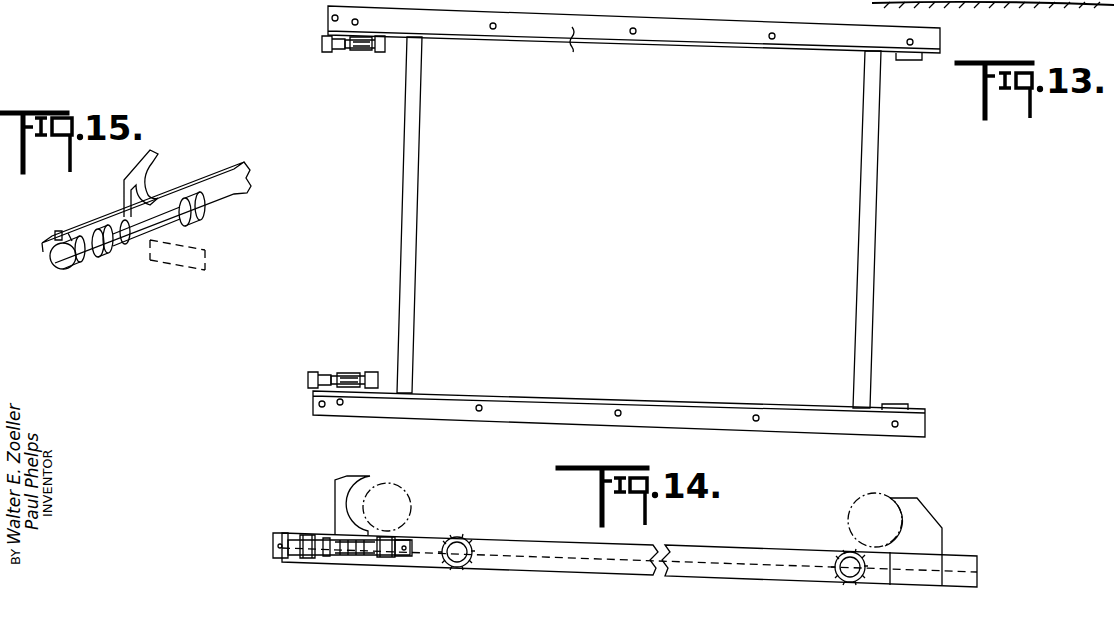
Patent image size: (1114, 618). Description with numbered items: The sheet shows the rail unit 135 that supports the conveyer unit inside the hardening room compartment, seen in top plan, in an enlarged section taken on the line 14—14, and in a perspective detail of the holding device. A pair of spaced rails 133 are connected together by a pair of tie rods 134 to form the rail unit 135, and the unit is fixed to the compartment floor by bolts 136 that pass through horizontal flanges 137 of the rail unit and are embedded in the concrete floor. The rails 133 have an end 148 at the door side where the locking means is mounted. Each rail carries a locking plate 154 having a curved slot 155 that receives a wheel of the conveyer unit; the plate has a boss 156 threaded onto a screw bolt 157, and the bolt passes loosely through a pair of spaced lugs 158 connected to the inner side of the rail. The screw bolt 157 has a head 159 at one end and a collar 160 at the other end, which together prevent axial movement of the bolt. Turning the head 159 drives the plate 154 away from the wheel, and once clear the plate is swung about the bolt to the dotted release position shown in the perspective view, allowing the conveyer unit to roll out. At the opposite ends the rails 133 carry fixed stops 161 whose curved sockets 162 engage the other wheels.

In FIG. 13, the section line 14 is at (329, 77).
In FIG. 13, the rails 133 is at (676, 45).
In FIG. 14, the rails 133 is at (543, 540).
In FIG. 15, the rails 133 is at (232, 176).
In FIG. 13, the tie rods 134 is at (422, 176).
In FIG. 14, the tie rods 134 is at (487, 526).
In FIG. 13, the rail unit 135 is at (876, 262).
In FIG. 14, the rail unit 135 is at (723, 544).
In FIG. 13, the bolts 136 is at (493, 30).
In FIG. 13, the horizontal flanges 137 is at (573, 47).
In FIG. 13, the frame end 148 is at (328, 20).
In FIG. 13, the locking plates 154 is at (362, 51).
In FIG. 14, the locking plates 154 is at (335, 490).
In FIG. 15, the locking plates 154 is at (152, 160).
In FIG. 14, the curved slot 155 is at (361, 505).
In FIG. 15, the curved slot 155 is at (146, 182).
In FIG. 14, the boss 156 is at (345, 556).
In FIG. 15, the boss 156 is at (178, 258).
In FIG. 14, the screw bolt 157 is at (326, 556).
In FIG. 15, the screw bolt 157 is at (127, 245).
In FIG. 14, the spaced lugs 158 is at (308, 536).
In FIG. 15, the spaced lugs 158 is at (105, 258).
In FIG. 13, the head 159 is at (318, 45).
In FIG. 14, the head 159 is at (273, 546).
In FIG. 15, the head 159 is at (65, 267).
In FIG. 14, the collar 160 is at (410, 556).
In FIG. 15, the collar 160 is at (202, 210).
In FIG. 13, the fixed stops 161 is at (903, 60).
In FIG. 14, the fixed stops 161 is at (925, 523).
In FIG. 14, the curved sockets 162 is at (903, 520).